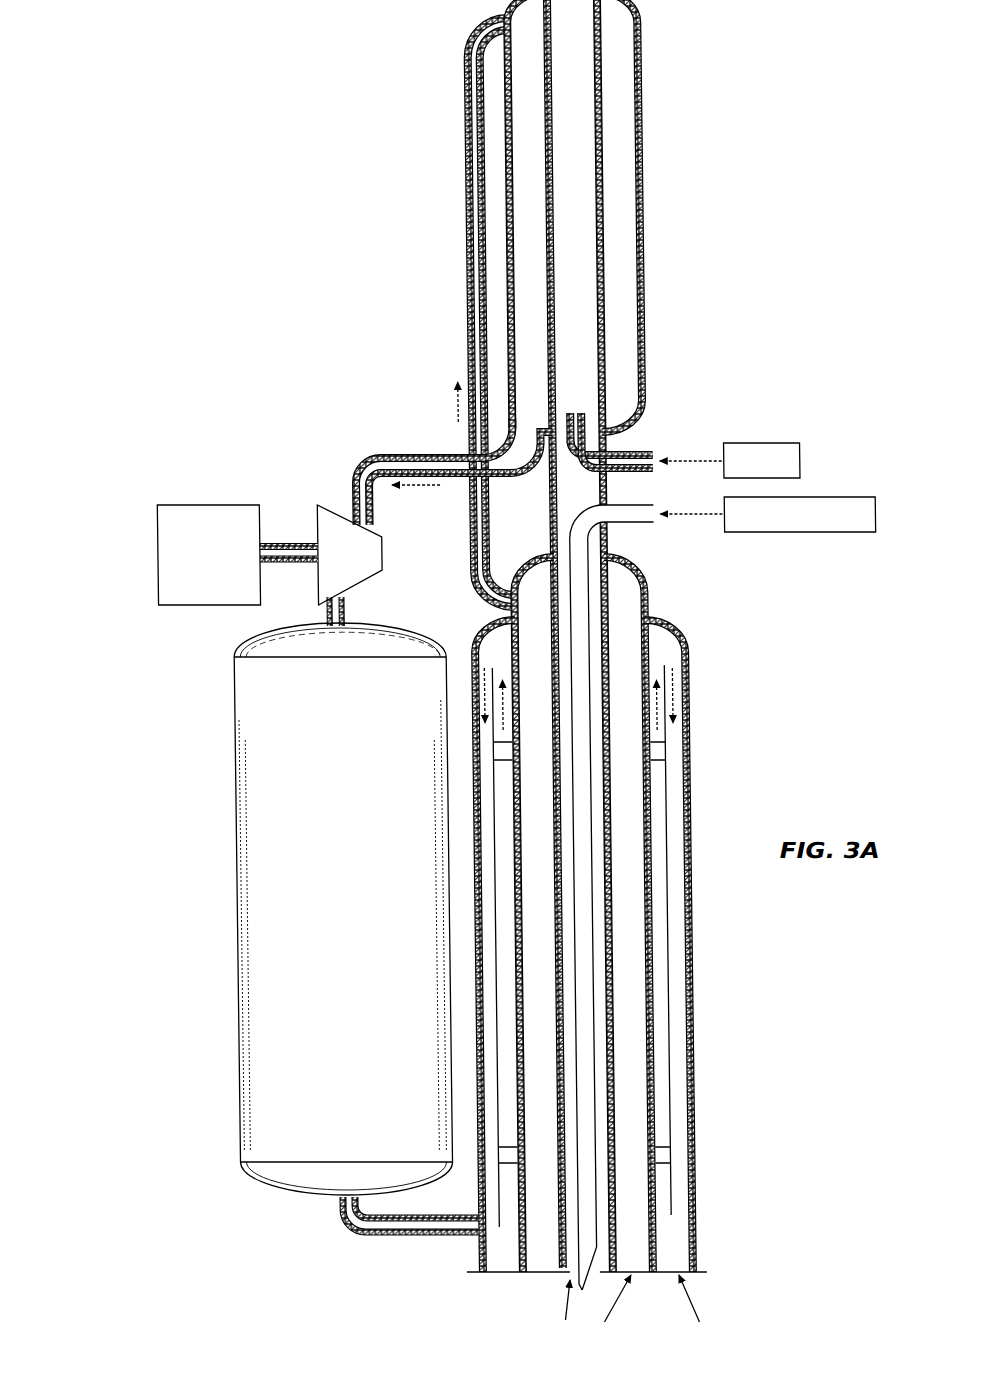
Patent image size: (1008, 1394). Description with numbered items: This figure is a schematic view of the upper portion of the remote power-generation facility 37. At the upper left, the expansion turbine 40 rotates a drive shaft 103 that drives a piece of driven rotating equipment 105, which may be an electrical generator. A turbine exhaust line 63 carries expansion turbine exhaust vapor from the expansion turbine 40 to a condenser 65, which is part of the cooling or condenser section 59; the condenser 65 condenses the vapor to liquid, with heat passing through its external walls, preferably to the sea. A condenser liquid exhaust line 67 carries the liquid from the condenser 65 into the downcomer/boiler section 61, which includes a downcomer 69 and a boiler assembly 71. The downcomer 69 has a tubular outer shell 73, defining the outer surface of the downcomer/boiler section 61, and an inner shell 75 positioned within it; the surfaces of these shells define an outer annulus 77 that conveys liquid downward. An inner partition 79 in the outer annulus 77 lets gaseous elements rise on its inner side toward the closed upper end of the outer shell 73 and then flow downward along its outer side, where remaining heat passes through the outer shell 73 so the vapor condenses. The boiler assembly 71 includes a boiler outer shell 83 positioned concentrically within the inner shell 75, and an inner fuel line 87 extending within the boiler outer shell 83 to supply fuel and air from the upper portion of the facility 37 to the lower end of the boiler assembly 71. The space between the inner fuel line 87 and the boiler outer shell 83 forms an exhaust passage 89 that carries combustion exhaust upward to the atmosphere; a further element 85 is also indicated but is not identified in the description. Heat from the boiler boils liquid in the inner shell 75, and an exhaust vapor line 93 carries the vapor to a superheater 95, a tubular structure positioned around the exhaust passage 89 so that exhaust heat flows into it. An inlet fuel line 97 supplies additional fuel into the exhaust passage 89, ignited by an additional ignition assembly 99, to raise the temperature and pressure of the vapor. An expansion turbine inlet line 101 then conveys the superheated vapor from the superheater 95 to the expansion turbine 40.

The remote power-generation facility 37 is at (143, 117).
The expansion turbine 40 is at (319, 505).
The cooling or condenser section 59 is at (209, 659).
The downcomer/boiler section 61 is at (700, 1140).
The turbine exhaust line 63 is at (337, 603).
The condenser 65 is at (227, 770).
The condenser liquid exhaust line 67 is at (375, 1236).
The downcomer 69 is at (641, 610).
The boiler assembly 71 is at (600, 540).
The outer shell 73 is at (681, 918).
The inner shell 75 is at (641, 793).
The outer annulus 77 is at (711, 1312).
The inner partition 79 is at (659, 982).
The boiler outer shell 83 is at (602, 1237).
The passage 85 is at (598, 1312).
The inner fuel line 87 is at (584, 1040).
The exhaust passage 89 is at (546, 1326).
The exhaust vapor line 93 is at (464, 125).
The superheater 95 is at (641, 73).
The inlet fuel line 97 is at (634, 452).
The additional ignition assembly 99 is at (568, 417).
The expansion turbine inlet line 101 is at (384, 454).
The drive shaft 103 is at (290, 543).
The driven rotating equipment 105 is at (177, 505).